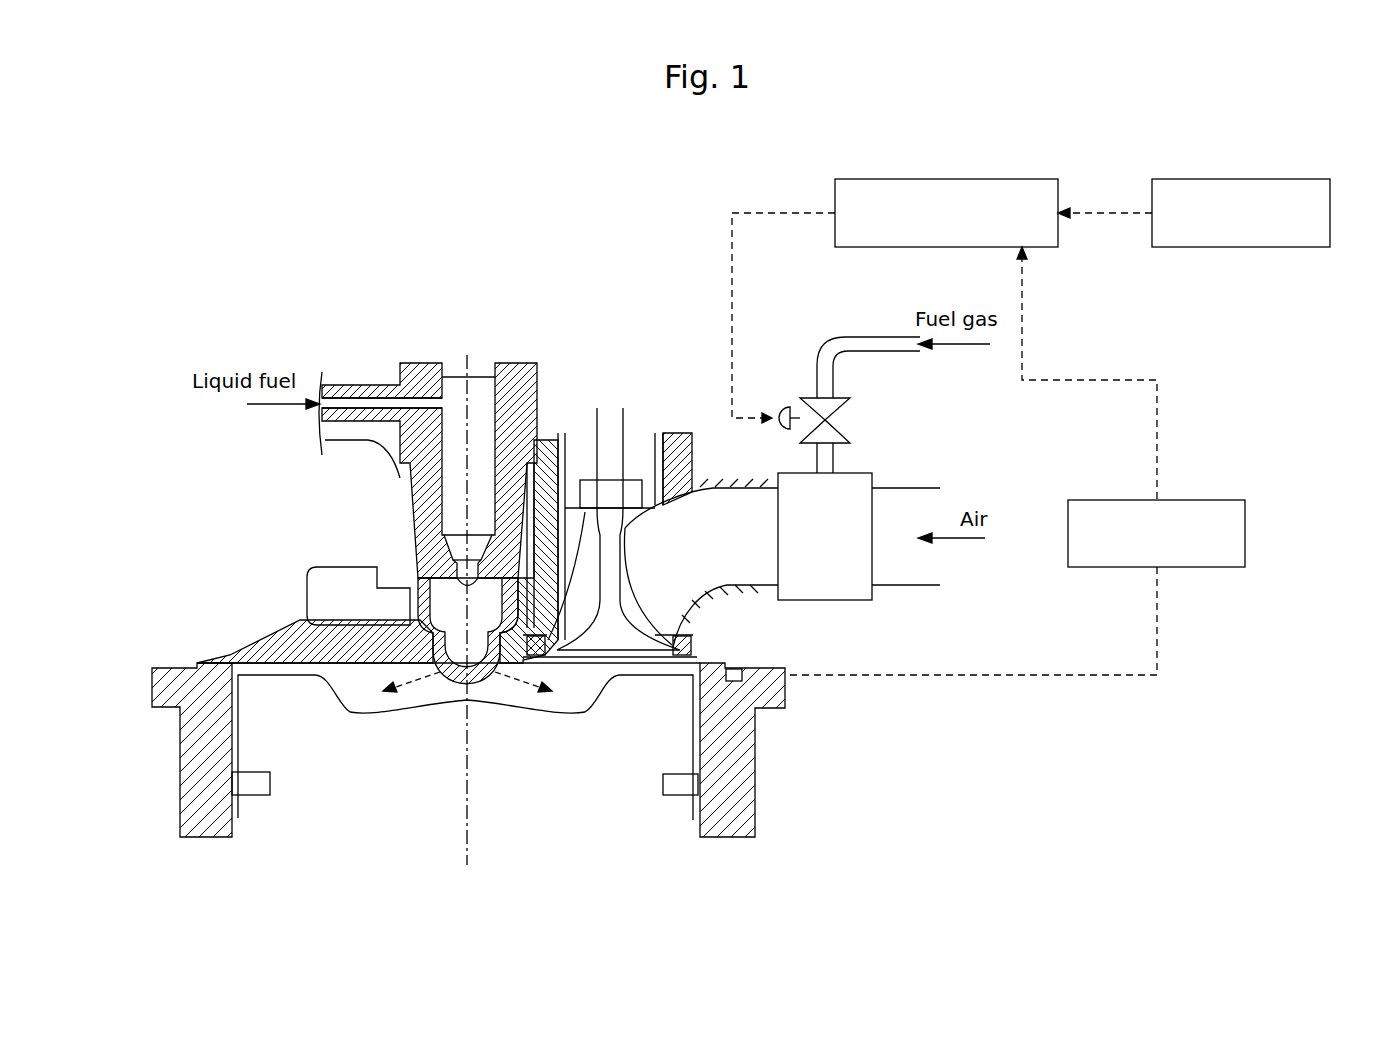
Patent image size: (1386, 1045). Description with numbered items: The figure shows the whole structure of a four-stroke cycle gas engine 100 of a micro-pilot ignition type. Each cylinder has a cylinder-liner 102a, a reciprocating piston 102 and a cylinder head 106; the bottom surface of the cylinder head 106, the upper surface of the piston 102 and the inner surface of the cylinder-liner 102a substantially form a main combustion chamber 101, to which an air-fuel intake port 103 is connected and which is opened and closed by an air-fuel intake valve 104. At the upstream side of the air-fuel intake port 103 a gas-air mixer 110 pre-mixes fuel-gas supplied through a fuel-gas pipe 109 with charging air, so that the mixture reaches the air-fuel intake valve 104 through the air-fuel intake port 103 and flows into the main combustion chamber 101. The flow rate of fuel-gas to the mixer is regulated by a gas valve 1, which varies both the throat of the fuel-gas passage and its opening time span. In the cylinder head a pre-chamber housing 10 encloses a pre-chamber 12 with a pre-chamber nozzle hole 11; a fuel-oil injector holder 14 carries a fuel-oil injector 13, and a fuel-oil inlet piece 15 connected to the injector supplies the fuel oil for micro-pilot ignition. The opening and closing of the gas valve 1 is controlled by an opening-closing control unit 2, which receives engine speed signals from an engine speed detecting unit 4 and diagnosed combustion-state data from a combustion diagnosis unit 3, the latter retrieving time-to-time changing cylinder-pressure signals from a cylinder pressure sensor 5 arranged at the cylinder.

The gas valve 1 is at (840, 408).
The opening-closing control unit 2 is at (955, 179).
The combustion diagnosis unit 3 is at (1210, 567).
The engine speed detecting unit 4 is at (1243, 179).
The cylinder pressure sensor 5 is at (757, 678).
The pre-chamber housing 10 is at (487, 693).
The pre-chamber nozzle hole 11 is at (447, 690).
The pre-chamber 12 is at (447, 613).
The fuel-oil injector 13 is at (477, 540).
The fuel-oil injector holder 14 is at (517, 388).
The fuel-oil inlet piece 15 is at (363, 400).
The engine 100 is at (772, 805).
The main combustion chamber 101 is at (352, 700).
The piston 102 is at (626, 740).
The cylinder-liner 102a is at (738, 742).
The air-fuel intake port 103 is at (717, 520).
The air-fuel intake valve 104 is at (657, 634).
The cylinder head 106 is at (250, 647).
The fuel-gas pipe 109 is at (868, 336).
The gas-air mixer 110 is at (853, 565).